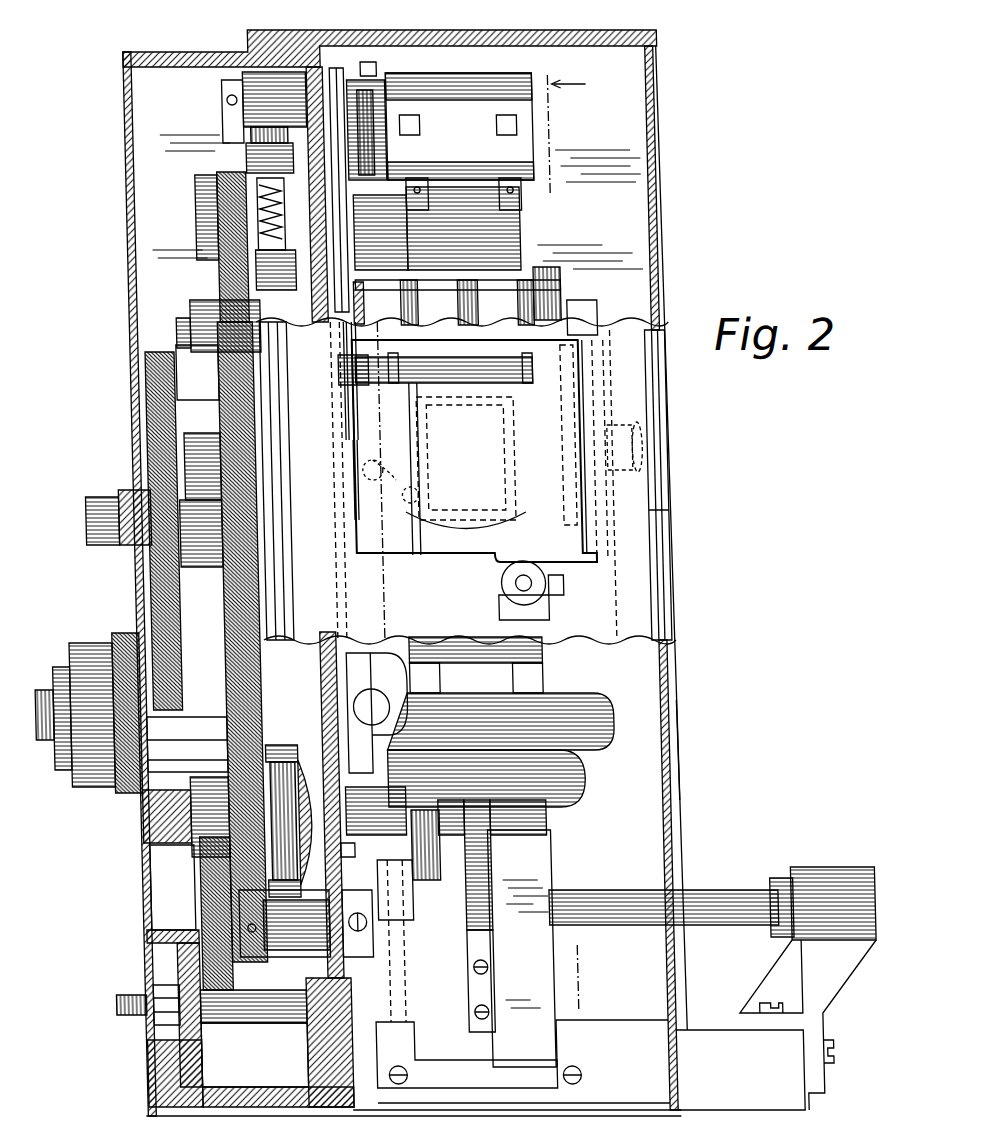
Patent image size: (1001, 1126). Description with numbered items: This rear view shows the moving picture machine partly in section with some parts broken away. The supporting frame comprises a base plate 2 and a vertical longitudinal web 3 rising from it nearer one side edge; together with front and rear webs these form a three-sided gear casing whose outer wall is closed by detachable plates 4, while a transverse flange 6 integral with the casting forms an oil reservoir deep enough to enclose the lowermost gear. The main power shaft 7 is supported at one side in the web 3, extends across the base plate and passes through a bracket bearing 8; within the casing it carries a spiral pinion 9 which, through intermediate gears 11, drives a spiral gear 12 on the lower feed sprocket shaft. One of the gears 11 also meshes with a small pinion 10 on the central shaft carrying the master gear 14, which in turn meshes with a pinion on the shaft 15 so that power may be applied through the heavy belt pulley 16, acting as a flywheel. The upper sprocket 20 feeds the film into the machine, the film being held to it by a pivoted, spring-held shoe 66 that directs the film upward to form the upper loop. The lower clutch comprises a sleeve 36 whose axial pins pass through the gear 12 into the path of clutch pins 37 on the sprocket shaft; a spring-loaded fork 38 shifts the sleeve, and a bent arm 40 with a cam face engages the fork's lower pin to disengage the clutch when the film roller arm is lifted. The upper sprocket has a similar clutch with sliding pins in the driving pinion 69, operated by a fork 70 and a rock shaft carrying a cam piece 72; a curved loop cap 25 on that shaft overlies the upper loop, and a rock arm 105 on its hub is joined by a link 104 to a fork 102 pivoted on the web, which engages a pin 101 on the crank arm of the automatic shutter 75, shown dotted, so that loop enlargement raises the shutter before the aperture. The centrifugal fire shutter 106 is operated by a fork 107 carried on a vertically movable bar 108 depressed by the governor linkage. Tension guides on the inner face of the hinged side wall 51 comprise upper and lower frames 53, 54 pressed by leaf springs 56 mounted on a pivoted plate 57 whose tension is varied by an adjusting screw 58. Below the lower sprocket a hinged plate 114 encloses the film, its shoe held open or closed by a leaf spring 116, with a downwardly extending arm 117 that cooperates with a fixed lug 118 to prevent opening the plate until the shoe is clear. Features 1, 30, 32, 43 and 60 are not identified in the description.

The section line 1 is at (577, 543).
The base plate 2 is at (612, 1046).
The vertical longitudinal web 3 is at (338, 67).
The detachable plates 4 is at (134, 108).
The transverse flange 6 is at (190, 1028).
The main power shaft 7 is at (714, 890).
The bracket bearing 8 is at (822, 867).
The spiral pinion 9 is at (205, 912).
The small pinion 10 is at (228, 576).
The intermediate gears 11 is at (190, 893).
The spiral gear 12 is at (185, 805).
The master gear 14 is at (150, 435).
The shaft 15 is at (62, 720).
The belt pulley 16 is at (144, 1000).
The upper sprocket 20 is at (530, 193).
The curved hood or loop cap 25 is at (459, 126).
The bar 30 is at (535, 685).
The base plate 32 is at (484, 940).
The sleeve 36 is at (348, 850).
The clutch pins 37 is at (218, 780).
The fork 38 is at (279, 748).
The bent arm 40 is at (560, 270).
The block 43 is at (592, 308).
The side wall 51 is at (676, 765).
The upper frame 53 is at (436, 406).
The lower frame 54 is at (512, 420).
The leaf springs 56 is at (440, 325).
The plate 57 is at (525, 325).
The adjusting screw 58 is at (547, 578).
The stop 60 is at (670, 437).
The shoe 66 is at (463, 228).
The driving pinion 69 is at (236, 185).
The fork 70 is at (230, 270).
The cam piece 72 is at (237, 118).
The automatic shutter 75 is at (440, 565).
The pin 101 is at (405, 500).
The fork 102 is at (380, 460).
The link 104 is at (354, 242).
The rock arm 105 is at (396, 112).
The centrifugally operated fire shutter 106 is at (500, 527).
The fork 107 is at (322, 322).
The bar 108 is at (370, 285).
The hinged plate 114 is at (522, 890).
The leaf spring 116 is at (486, 862).
The downwardly extending arm 117 is at (408, 885).
The fixed lug 118 is at (390, 900).